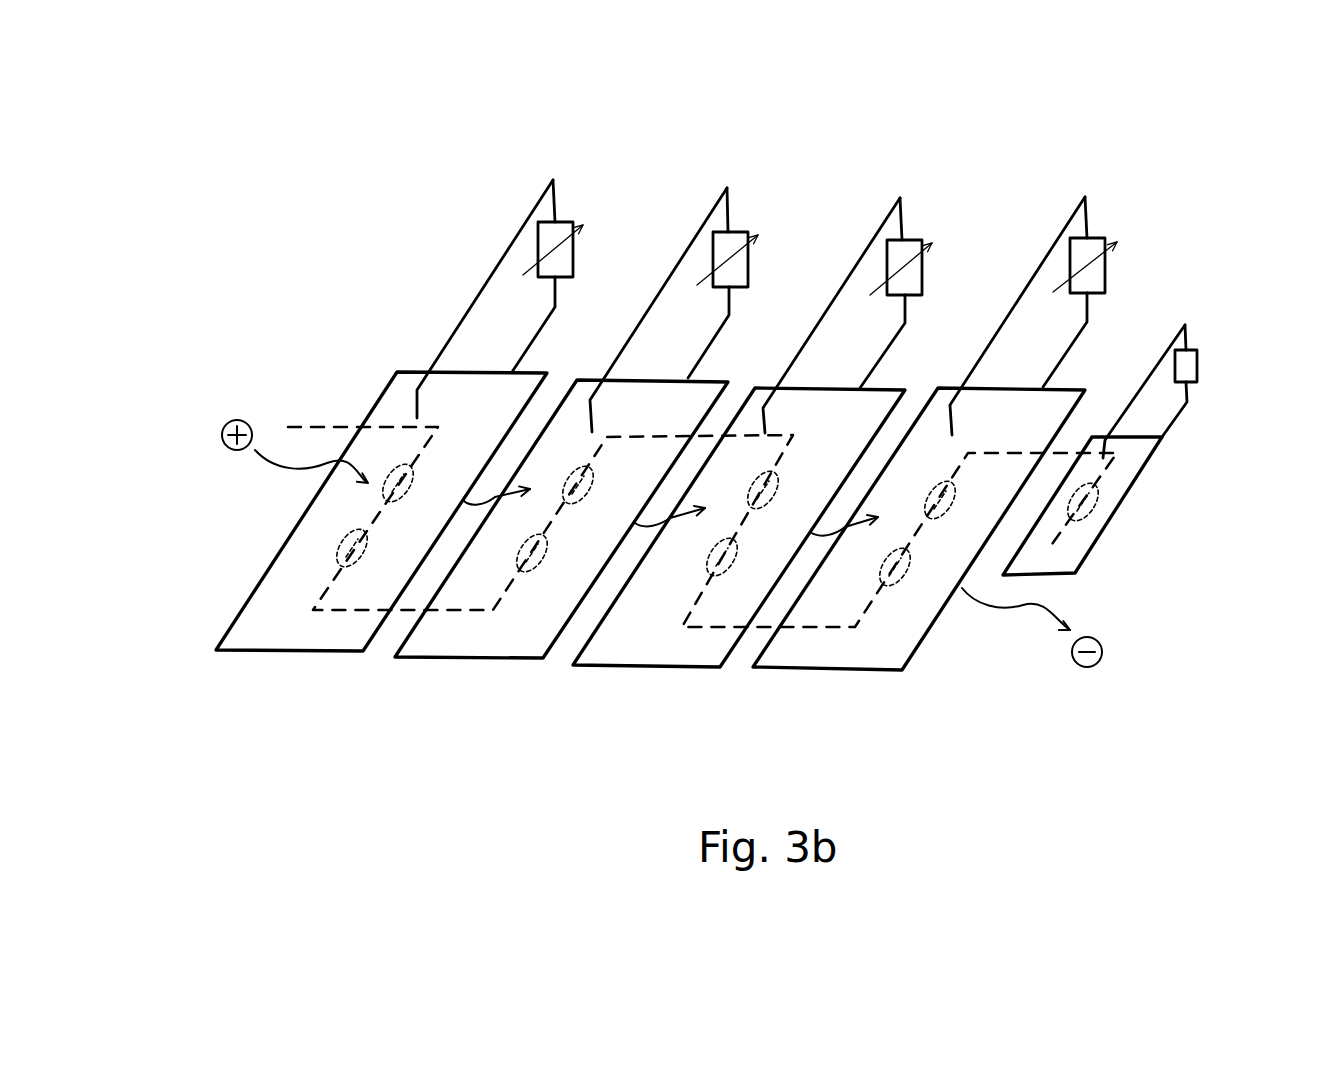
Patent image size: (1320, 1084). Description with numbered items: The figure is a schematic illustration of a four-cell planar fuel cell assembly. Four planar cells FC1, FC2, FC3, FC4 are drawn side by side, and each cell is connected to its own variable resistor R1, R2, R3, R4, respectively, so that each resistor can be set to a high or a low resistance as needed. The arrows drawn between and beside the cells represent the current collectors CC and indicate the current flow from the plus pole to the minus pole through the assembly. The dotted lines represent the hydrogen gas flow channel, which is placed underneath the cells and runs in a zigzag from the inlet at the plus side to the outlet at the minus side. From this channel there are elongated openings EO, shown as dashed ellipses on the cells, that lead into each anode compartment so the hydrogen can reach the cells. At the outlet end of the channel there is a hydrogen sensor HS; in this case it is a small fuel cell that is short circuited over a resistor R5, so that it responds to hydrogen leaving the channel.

The variable resistor R1 is at (573, 250).
The variable resistor R2 is at (750, 262).
The variable resistor R3 is at (923, 272).
The variable resistor R4 is at (1105, 272).
The resistor R5 is at (1190, 372).
The fuel cell FC1 is at (330, 633).
The fuel cell FC2 is at (495, 643).
The fuel cell FC3 is at (625, 642).
The fuel cell FC4 is at (910, 613).
The hydrogen sensor HS is at (1097, 537).
The current collectors CC is at (493, 502).
The elongated openings EO is at (343, 538).